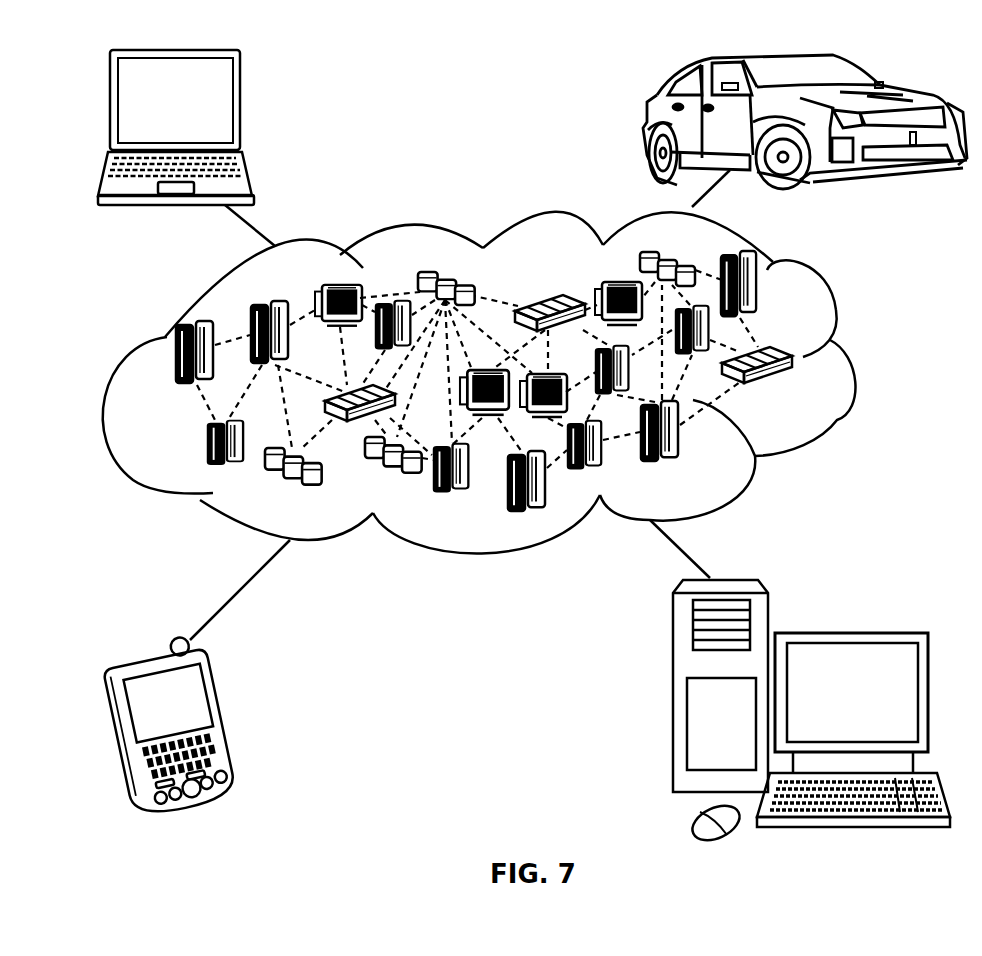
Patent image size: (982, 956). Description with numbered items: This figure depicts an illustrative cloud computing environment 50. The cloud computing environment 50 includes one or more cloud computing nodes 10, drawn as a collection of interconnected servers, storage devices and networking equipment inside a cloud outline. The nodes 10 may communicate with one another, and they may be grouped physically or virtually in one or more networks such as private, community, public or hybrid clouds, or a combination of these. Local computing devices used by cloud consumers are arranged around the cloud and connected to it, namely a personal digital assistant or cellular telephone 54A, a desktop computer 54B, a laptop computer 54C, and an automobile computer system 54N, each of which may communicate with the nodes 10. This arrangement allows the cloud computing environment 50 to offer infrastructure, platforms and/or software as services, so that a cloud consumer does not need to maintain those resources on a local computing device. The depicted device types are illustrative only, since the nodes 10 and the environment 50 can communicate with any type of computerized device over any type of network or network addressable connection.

The cloud computing node 10 is at (532, 381).
The cloud computing environment 50 is at (850, 360).
The personal digital assistant (PDA) or cellular telephone 54A is at (232, 718).
The desktop computer 54B is at (850, 632).
The laptop computer 54C is at (240, 108).
The automobile computer system 54N is at (647, 122).